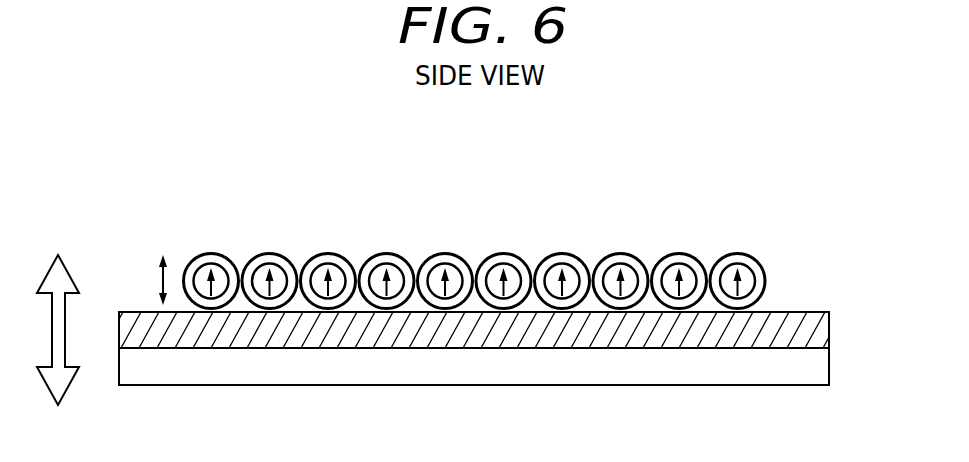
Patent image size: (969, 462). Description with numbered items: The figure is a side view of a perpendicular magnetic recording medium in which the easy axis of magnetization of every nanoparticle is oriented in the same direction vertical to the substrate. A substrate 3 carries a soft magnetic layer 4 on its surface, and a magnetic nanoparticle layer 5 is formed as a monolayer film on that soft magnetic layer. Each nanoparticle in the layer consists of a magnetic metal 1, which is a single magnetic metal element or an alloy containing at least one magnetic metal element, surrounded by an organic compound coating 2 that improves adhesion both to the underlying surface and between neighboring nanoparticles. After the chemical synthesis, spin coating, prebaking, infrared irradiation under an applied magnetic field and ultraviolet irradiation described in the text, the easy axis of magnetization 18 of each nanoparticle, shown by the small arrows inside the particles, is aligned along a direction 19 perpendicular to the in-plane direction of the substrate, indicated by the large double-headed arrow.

The magnetic metal 1 is at (744, 286).
The organic compound coating 2 is at (766, 287).
The substrate 3 is at (812, 370).
The soft magnetic layer 4 is at (813, 328).
The magnetic nanoparticle layer 5 is at (160, 280).
The easy axis of magnetization 18 is at (447, 289).
The direction perpendicular to the in-plane direction of the substrate 19 is at (45, 277).